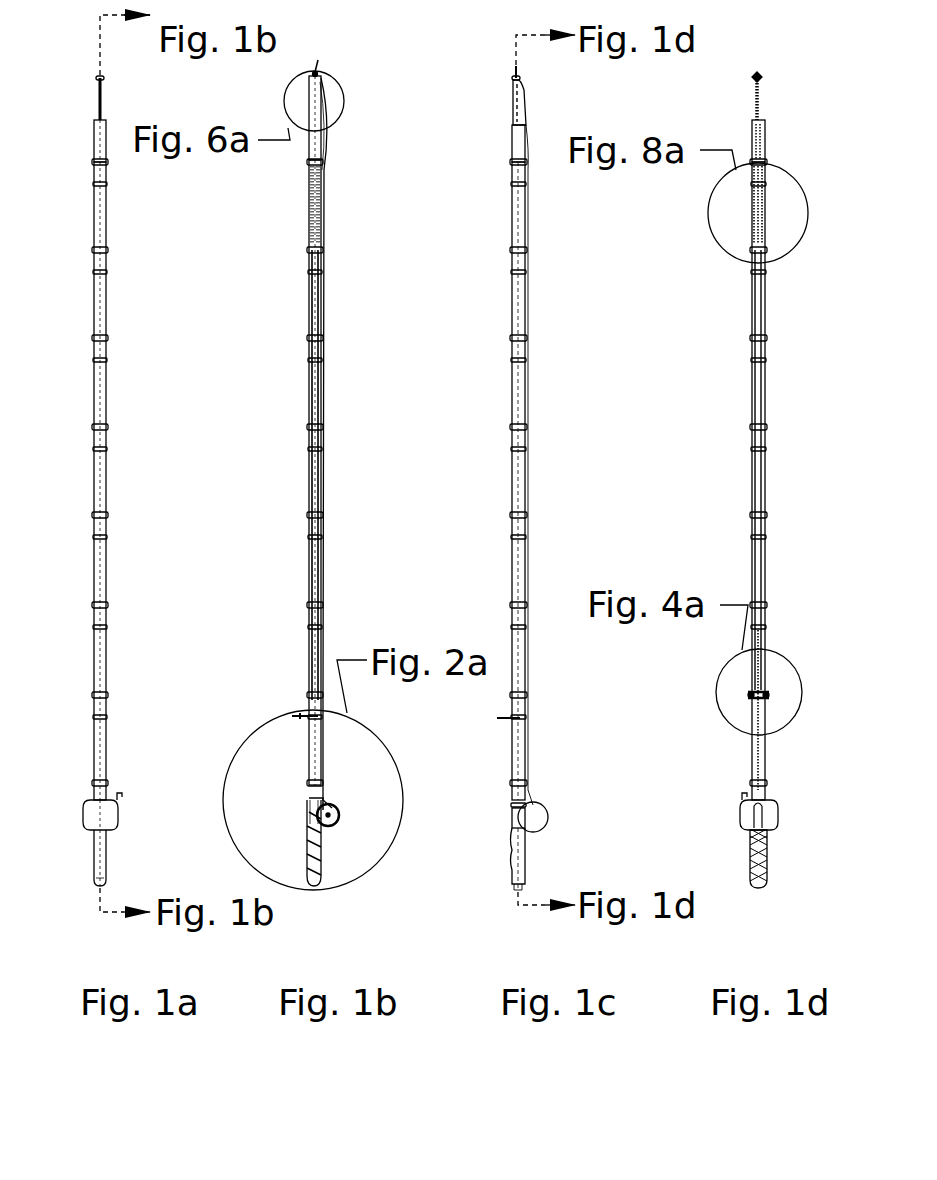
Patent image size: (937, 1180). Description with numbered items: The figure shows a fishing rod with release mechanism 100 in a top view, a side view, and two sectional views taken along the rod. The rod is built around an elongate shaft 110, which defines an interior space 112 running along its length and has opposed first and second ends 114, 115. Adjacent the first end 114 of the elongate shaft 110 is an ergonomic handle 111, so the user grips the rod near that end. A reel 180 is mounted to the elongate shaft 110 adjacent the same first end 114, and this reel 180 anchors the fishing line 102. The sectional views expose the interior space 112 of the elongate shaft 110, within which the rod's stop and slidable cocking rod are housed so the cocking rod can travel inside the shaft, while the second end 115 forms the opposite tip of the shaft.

In FIG. 1A, the fishing rod with release mechanism 100 is at (88, 897).
In FIG. 1B, the fishing rod with release mechanism 100 is at (318, 893).
In FIG. 1C, the fishing rod with release mechanism 100 is at (508, 892).
In FIG. 1D, the fishing rod with release mechanism 100 is at (768, 891).
In FIG. 1C, the fishing line 102 is at (528, 100).
In FIG. 1A, the elongate shaft 110 is at (110, 550).
In FIG. 1B, the elongate shaft 110 is at (303, 468).
In FIG. 1C, the elongate shaft 110 is at (507, 381).
In FIG. 1D, the elongate shaft 110 is at (750, 398).
In FIG. 1A, the ergonomic handle 111 is at (94, 857).
In FIG. 1B, the ergonomic handle 111 is at (307, 848).
In FIG. 1C, the ergonomic handle 111 is at (510, 851).
In FIG. 1D, the ergonomic handle 111 is at (752, 852).
In FIG. 1B, the interior space 112 is at (312, 385).
In FIG. 1C, the first end 114 is at (515, 826).
In FIG. 1A, the second end 115 is at (95, 128).
In FIG. 1B, the second end 115 is at (305, 122).
In FIG. 1C, the second end 115 is at (510, 125).
In FIG. 1D, the second end 115 is at (752, 125).
In FIG. 1A, the reel 180 is at (118, 828).
In FIG. 1B, the reel 180 is at (336, 808).
In FIG. 1C, the reel 180 is at (548, 812).
In FIG. 1D, the reel 180 is at (742, 818).